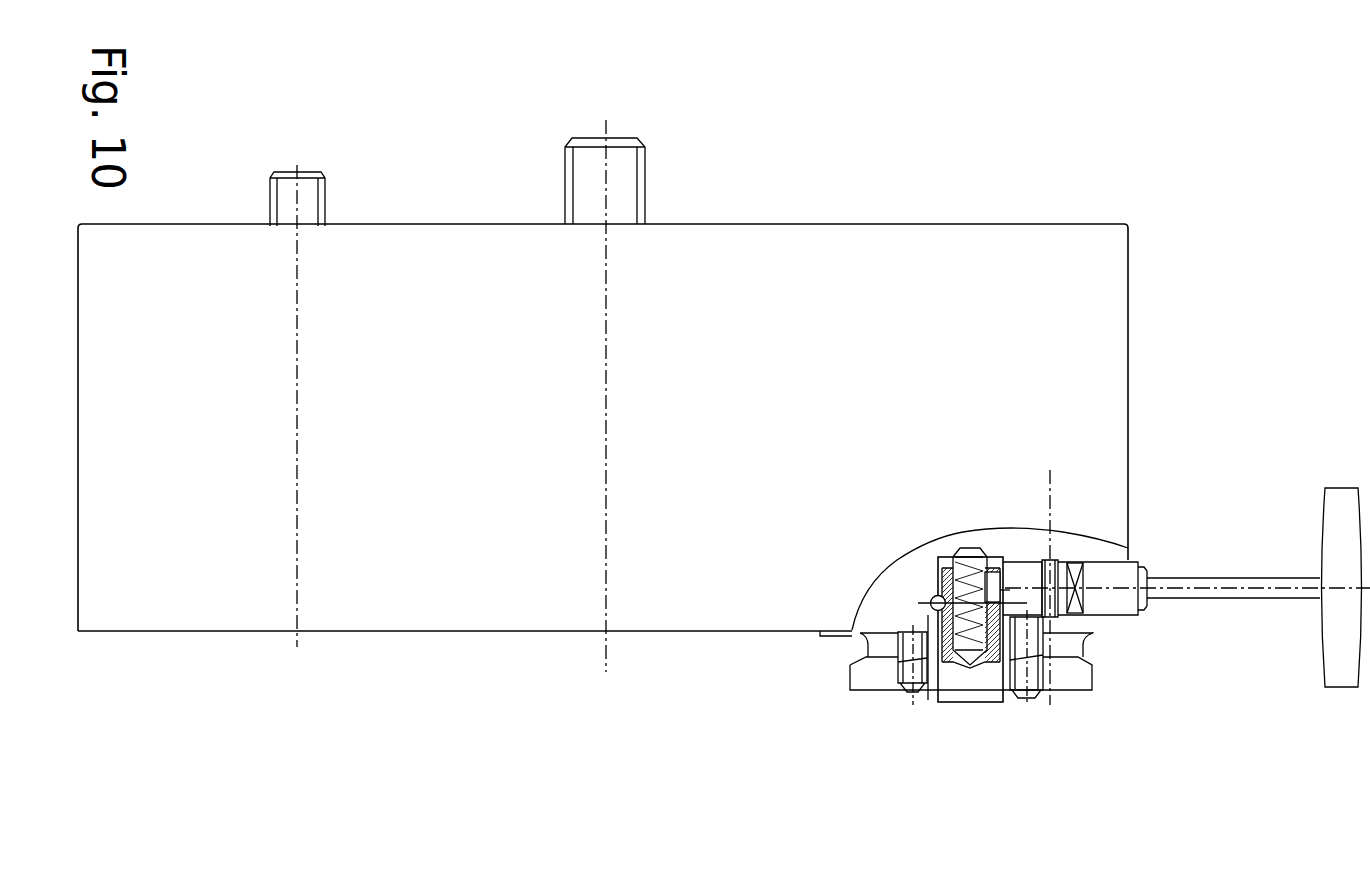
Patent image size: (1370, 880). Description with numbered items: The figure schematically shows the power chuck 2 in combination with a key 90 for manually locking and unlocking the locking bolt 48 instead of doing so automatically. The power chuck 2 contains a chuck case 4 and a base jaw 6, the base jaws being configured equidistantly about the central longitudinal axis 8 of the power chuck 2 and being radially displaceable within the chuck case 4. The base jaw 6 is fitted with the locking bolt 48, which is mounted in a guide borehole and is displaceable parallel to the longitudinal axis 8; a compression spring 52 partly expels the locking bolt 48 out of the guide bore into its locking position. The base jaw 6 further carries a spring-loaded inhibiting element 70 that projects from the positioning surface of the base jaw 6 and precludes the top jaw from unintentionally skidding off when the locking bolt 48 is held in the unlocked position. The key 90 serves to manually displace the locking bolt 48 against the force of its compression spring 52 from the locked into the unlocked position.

The power chuck 2 is at (720, 199).
The chuck case 4 is at (912, 247).
The base jaw 6 is at (1117, 620).
The central longitudinal axis 8 is at (606, 638).
The locking bolt 48 is at (982, 688).
The compression spring 52 is at (978, 550).
The inhibiting element 70 is at (1032, 695).
The key 90 is at (1158, 585).